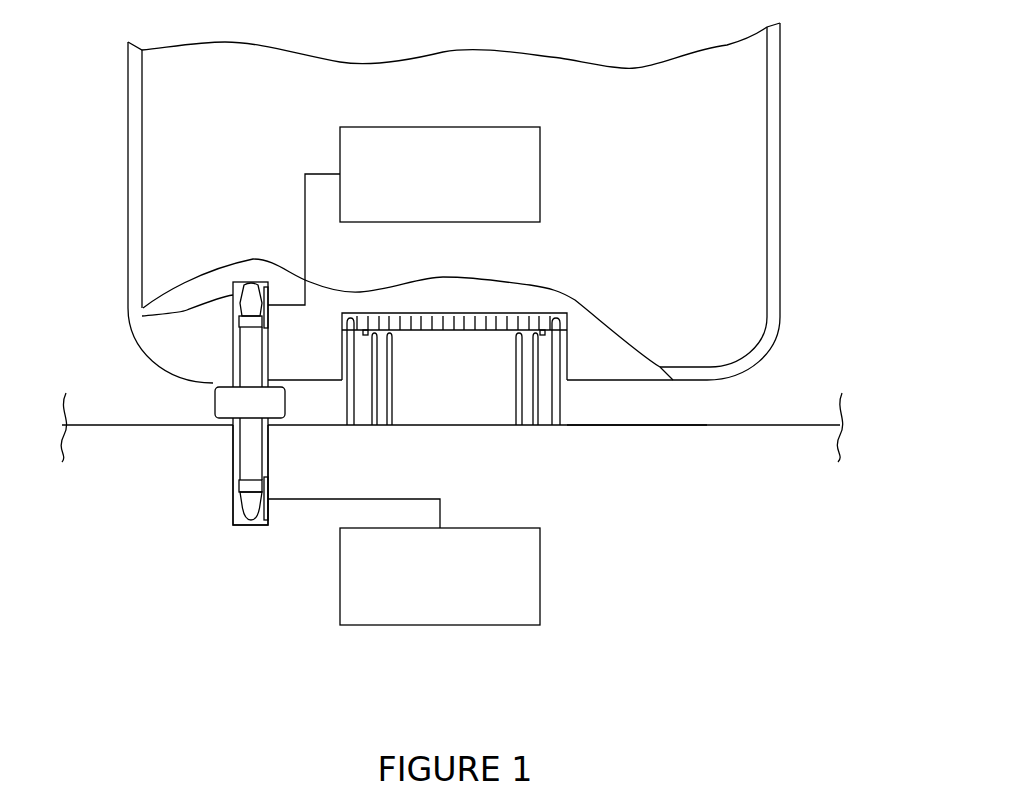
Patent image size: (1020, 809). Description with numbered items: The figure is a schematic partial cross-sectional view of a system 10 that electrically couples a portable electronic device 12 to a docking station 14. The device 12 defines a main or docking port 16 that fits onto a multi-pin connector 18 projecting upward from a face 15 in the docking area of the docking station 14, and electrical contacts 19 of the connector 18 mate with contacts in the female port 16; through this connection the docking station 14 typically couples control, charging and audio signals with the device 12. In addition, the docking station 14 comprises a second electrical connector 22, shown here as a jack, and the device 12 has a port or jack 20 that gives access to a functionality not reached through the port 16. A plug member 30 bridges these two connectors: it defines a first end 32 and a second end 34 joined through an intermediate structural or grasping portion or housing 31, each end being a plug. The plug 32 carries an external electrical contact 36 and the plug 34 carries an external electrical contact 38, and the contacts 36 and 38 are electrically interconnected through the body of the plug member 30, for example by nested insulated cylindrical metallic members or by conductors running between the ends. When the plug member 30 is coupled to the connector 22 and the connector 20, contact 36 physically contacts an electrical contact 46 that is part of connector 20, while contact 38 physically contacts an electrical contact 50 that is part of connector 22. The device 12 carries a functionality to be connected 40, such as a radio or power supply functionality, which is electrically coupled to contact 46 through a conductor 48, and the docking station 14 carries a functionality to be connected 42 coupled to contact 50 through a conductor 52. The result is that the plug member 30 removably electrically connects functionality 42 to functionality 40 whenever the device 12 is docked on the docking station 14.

The system 10 is at (697, 532).
The portable electronic device 12 is at (713, 254).
The docking station 14 is at (770, 443).
The face 15 is at (653, 425).
The docking port 16 is at (457, 335).
The multi-pin connector 18 is at (497, 403).
The electrical contacts 19 is at (433, 316).
The port or jack 20 is at (130, 321).
The second electrical connector 22 is at (232, 470).
The plug member 30 is at (193, 388).
The housing 31 is at (243, 405).
The first end 32 is at (184, 330).
The second end 34 is at (214, 498).
The external electrical contact 36 is at (247, 285).
The external electrical contact 38 is at (250, 508).
The functionality to be connected 40 is at (427, 127).
The functionality to be connected 42 is at (480, 528).
The electrical contact 46 is at (266, 296).
The conductor 48 is at (320, 173).
The electrical contact 50 is at (267, 488).
The conductor 52 is at (350, 499).